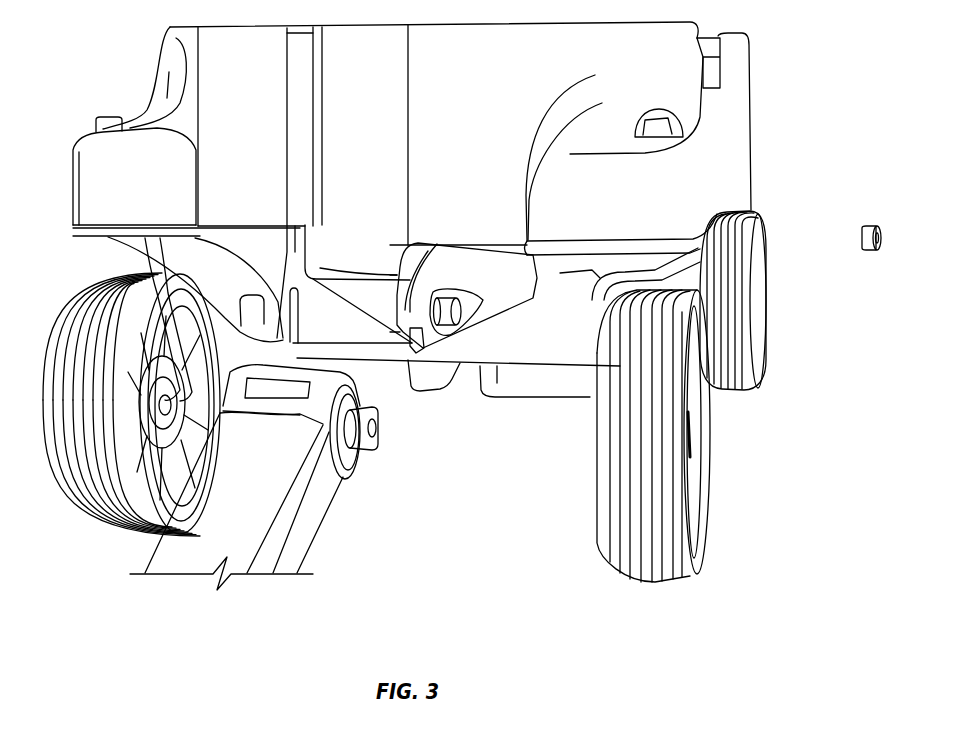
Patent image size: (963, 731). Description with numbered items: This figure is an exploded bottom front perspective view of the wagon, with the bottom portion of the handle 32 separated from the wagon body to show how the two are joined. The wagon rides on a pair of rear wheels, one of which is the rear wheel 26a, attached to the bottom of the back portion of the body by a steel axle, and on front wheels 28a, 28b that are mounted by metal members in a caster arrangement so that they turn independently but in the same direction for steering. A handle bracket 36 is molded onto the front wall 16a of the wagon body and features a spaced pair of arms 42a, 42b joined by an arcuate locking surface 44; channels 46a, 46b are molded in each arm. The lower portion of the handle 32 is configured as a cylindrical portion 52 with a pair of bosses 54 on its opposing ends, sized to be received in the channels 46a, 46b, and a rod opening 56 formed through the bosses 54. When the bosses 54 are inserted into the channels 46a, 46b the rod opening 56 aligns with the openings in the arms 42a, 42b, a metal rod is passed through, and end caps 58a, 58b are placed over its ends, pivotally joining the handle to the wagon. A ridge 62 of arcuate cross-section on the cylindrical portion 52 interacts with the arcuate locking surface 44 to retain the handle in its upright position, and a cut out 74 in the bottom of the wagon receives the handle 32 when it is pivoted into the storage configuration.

The front wall 16a is at (510, 98).
The handle bracket 36 is at (347, 158).
The arm 42a is at (437, 245).
The arm 42b is at (74, 231).
The arcuate locking surface 44 is at (358, 318).
The channel 46a is at (418, 362).
The channel 46b is at (281, 343).
The end cap 58a is at (460, 320).
The end cap 58b is at (243, 297).
The ridge 62 is at (291, 383).
The cylindrical portion 52 is at (355, 472).
The boss 54 is at (374, 442).
The rod opening 56 is at (375, 428).
The cut out 74 is at (480, 378).
The handle 32 is at (414, 550).
The rear wheel 26a is at (762, 323).
The front wheel 28a is at (703, 511).
The front wheel 28b is at (85, 523).